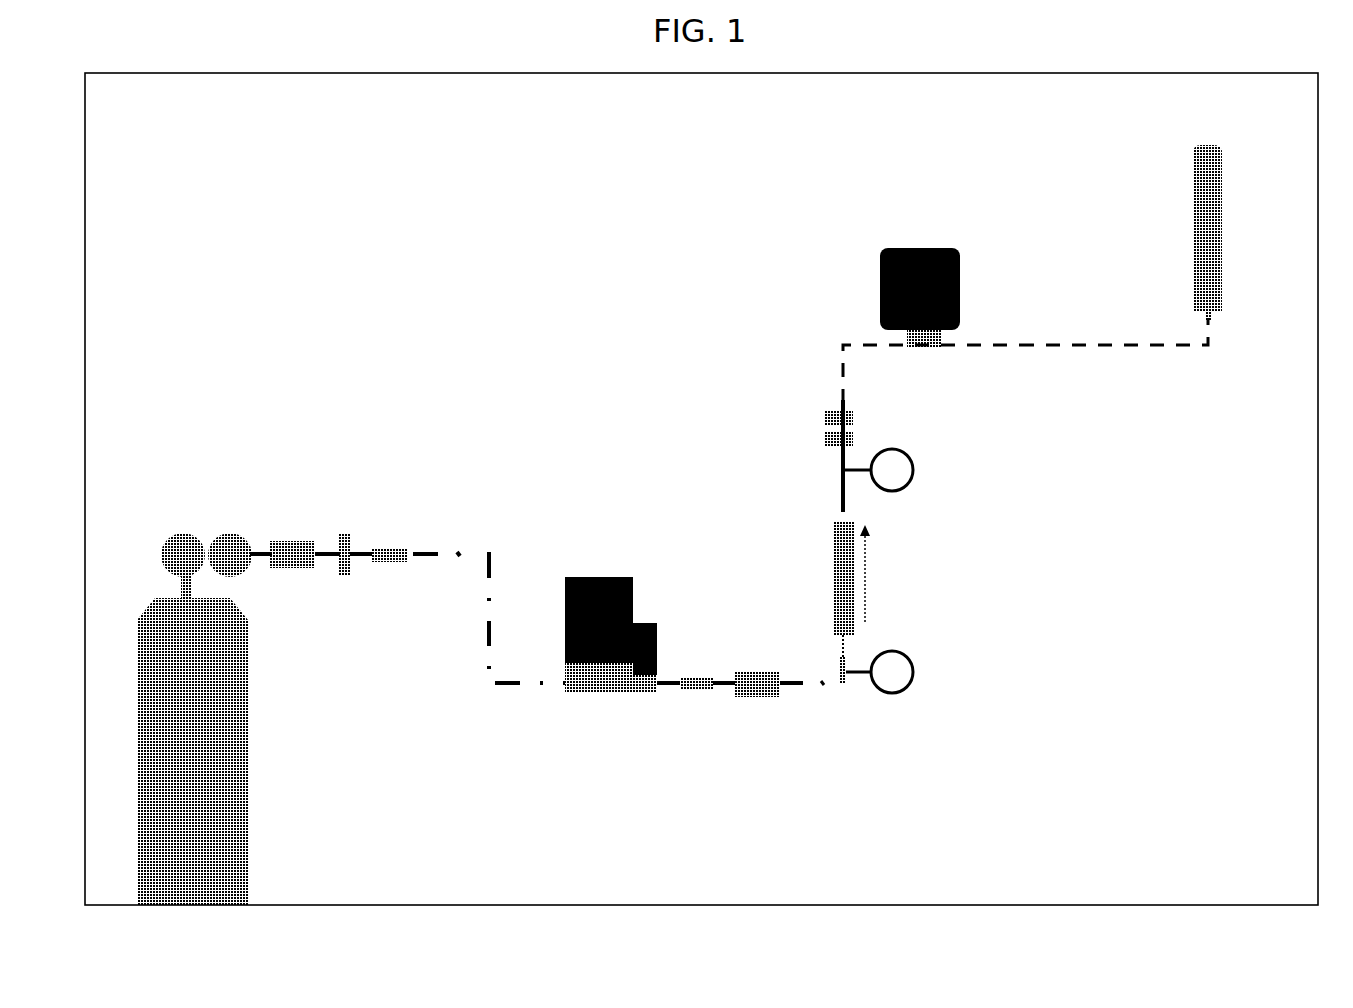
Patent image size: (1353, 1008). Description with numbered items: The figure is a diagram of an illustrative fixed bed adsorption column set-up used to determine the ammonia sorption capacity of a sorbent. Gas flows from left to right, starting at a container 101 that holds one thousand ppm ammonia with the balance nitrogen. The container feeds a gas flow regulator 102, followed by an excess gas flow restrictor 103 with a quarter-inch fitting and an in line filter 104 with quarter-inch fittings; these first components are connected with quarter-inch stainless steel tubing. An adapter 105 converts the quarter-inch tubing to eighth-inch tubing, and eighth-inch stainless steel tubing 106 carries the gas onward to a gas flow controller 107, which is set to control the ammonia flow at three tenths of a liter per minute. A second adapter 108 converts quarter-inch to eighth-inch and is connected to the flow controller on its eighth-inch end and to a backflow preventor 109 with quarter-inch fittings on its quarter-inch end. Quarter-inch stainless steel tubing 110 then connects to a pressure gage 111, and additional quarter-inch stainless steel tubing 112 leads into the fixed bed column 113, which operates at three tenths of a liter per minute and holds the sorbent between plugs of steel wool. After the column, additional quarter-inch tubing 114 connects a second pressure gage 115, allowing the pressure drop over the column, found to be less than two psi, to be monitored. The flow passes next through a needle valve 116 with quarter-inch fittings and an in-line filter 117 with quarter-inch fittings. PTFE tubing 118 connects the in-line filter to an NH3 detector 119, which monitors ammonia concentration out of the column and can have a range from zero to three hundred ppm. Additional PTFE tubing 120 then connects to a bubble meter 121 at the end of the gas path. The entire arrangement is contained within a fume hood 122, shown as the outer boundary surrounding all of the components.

The container 101 is at (192, 740).
The gas flow regulator 102 is at (216, 531).
The excess gas flow restrictor 103 is at (301, 526).
The in line filter 104 is at (346, 530).
The adapter 105 is at (404, 523).
The stainless steel tubing 106 is at (490, 552).
The gas flow controller 107 is at (622, 659).
The adapter 108 is at (707, 709).
The backflow preventor 109 is at (779, 707).
The stainless steel tubing 110 is at (833, 690).
The pressure gage 111 is at (922, 680).
The stainless steel tubing 112 is at (838, 652).
The fixed bed column 113 is at (883, 578).
The tubing 114 is at (838, 490).
The pressure gage 115 is at (915, 482).
The needle valve 116 is at (870, 431).
The in-line filter 117 is at (870, 401).
The PTFE tubing 118 is at (842, 358).
The NH3 detector 119 is at (920, 277).
The PTFE tubing 120 is at (1097, 345).
The bubble meter 121 is at (1243, 232).
The fume hood 122 is at (701, 489).